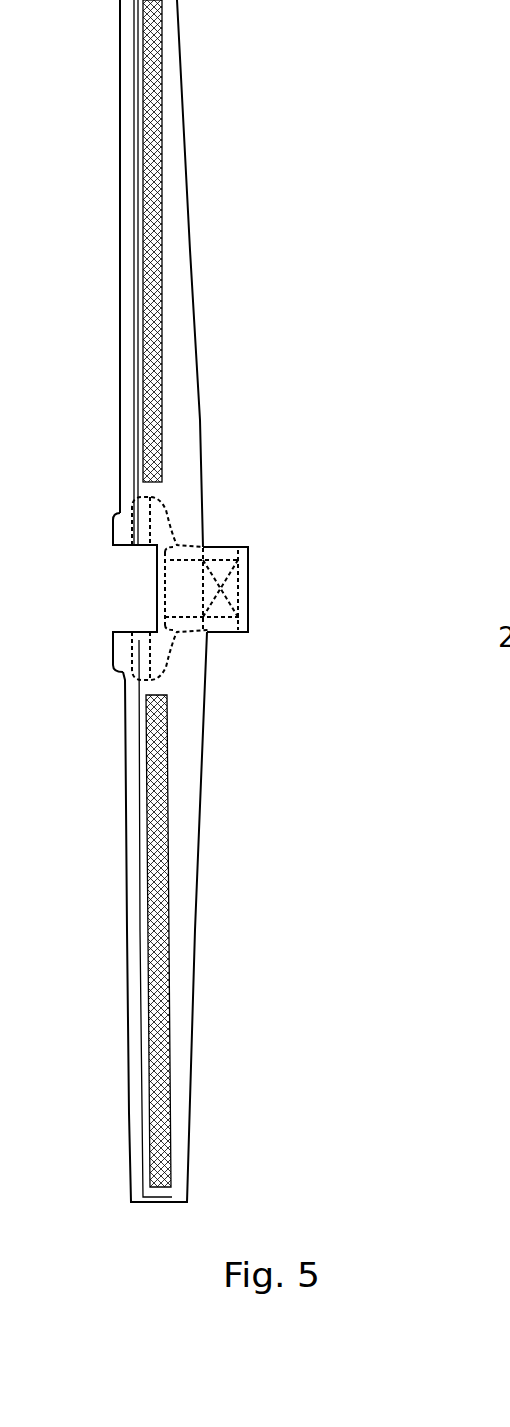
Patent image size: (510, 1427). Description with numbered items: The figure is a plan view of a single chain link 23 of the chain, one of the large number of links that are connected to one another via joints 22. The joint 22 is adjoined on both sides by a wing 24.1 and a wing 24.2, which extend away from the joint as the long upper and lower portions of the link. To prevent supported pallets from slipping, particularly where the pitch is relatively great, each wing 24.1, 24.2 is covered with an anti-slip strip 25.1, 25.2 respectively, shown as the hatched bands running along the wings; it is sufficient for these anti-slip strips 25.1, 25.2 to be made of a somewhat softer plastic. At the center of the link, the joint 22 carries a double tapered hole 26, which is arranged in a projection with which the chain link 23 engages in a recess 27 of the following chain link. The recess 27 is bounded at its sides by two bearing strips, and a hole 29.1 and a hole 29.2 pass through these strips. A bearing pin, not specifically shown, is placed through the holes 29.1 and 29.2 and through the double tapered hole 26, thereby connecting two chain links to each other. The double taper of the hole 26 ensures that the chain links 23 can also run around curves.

The joint 22 is at (262, 577).
The chain link 23 is at (240, 338).
The wing 24.1 is at (172, 132).
The wing 24.2 is at (182, 1035).
The anti-slip strip 25.1 is at (158, 240).
The anti-slip strip 25.2 is at (157, 879).
The double tapered hole 26 is at (217, 602).
The recess 27 is at (140, 597).
The hole 29.1 is at (135, 523).
The hole 29.2 is at (137, 652).